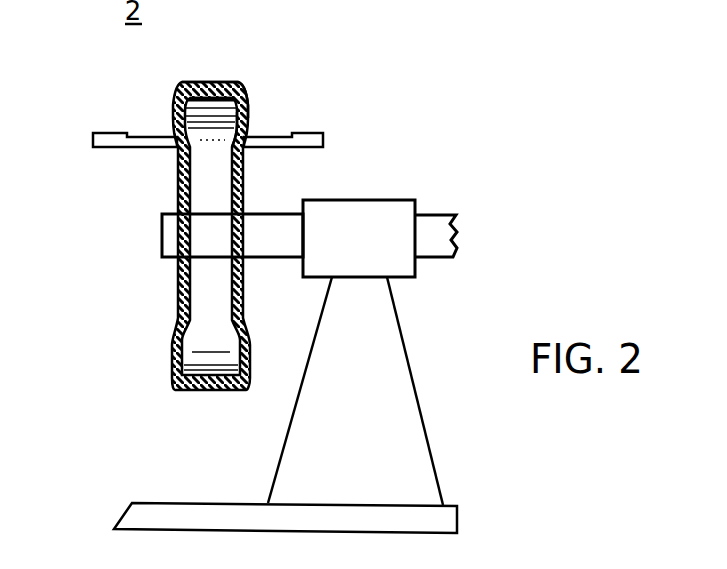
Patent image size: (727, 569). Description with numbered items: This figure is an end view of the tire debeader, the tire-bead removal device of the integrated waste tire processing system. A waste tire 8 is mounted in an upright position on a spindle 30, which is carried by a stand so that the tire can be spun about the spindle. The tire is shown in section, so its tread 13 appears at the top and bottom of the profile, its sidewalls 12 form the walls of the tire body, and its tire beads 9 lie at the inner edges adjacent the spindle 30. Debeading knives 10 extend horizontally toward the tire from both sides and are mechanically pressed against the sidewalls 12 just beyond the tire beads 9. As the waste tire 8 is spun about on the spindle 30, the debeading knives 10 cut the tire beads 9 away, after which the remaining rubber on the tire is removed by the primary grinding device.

The waste tire 8 is at (243, 92).
The tire beads 9 is at (178, 153).
The debeading knives 10 is at (110, 141).
The sidewalls 12 is at (247, 117).
The tread 13 is at (210, 83).
The spindle 30 is at (162, 237).